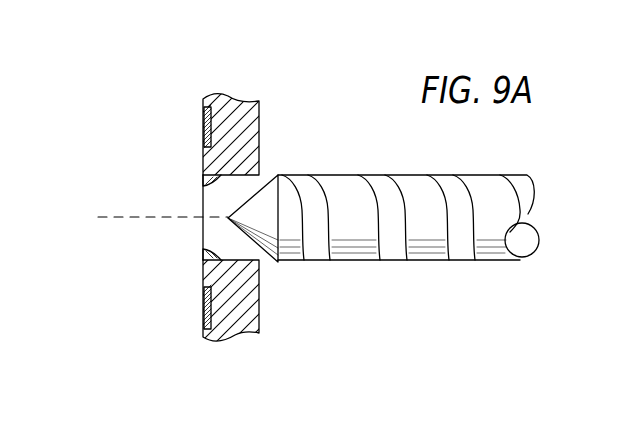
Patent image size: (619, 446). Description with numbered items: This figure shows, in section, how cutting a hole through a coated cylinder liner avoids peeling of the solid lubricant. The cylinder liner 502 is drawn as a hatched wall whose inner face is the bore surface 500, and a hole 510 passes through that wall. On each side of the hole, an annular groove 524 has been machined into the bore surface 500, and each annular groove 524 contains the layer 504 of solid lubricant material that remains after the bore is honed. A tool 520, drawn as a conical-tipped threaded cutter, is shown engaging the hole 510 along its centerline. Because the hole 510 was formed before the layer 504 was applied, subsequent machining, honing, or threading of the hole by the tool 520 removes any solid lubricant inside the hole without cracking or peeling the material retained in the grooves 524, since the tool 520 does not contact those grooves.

The bore surface 500 is at (203, 270).
The cylinder liner 502 is at (243, 332).
The layer of solid lubricant material 504 is at (204, 128).
The hole 510 is at (213, 229).
The tool 520 is at (478, 175).
The annular groove 524 is at (211, 115).